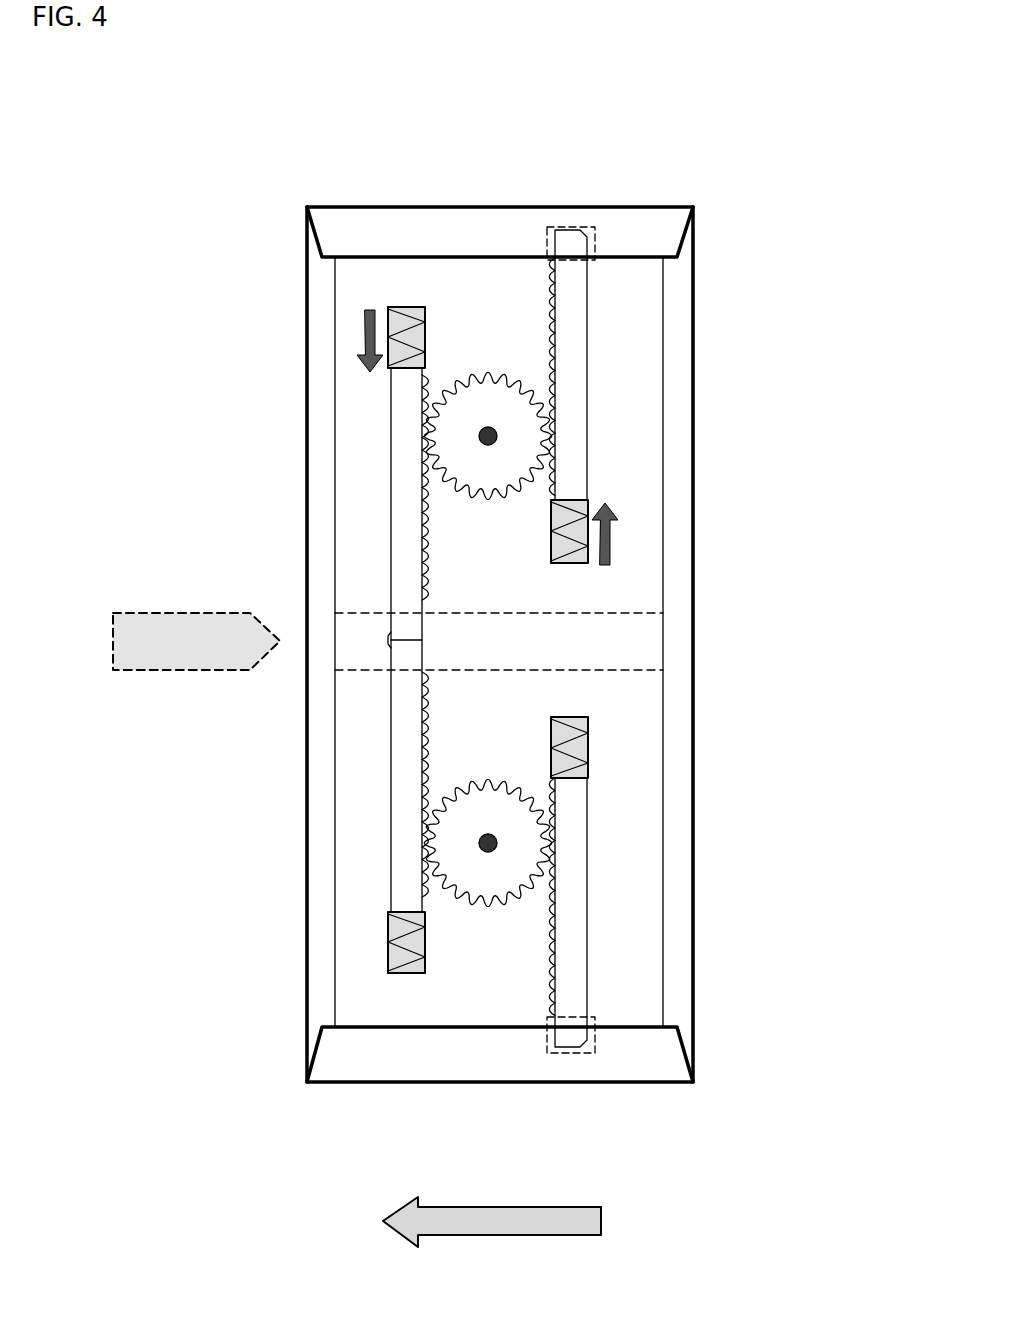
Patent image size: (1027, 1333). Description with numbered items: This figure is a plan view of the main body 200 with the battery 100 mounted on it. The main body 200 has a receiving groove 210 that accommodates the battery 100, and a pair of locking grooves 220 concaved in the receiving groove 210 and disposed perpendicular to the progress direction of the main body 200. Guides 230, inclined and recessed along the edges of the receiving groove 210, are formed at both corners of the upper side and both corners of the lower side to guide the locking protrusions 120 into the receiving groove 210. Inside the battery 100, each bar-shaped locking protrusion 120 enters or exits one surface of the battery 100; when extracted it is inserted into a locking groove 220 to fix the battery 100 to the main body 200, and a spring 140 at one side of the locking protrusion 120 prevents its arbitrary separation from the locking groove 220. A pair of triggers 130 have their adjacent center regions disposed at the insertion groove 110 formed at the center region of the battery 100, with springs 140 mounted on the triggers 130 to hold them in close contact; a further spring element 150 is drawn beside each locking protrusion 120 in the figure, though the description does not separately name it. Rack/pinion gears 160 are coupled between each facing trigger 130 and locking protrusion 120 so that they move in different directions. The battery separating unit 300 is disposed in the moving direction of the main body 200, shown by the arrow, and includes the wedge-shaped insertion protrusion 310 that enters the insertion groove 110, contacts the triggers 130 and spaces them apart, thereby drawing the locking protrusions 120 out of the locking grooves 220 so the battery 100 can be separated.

The battery 100 is at (335, 540).
The insertion groove 110 is at (350, 650).
The locking protrusion 120 is at (575, 383).
The trigger 130 is at (400, 466).
The spring 140 is at (405, 325).
The second elastic member 150 is at (575, 553).
The rack/pinion gears 160 is at (477, 362).
The main body 200 is at (305, 335).
The receiving groove 210 is at (370, 255).
The locking groove 220 is at (595, 243).
The guide 230 is at (307, 232).
The battery separating unit 300 is at (100, 604).
The insertion protrusion 310 is at (150, 650).